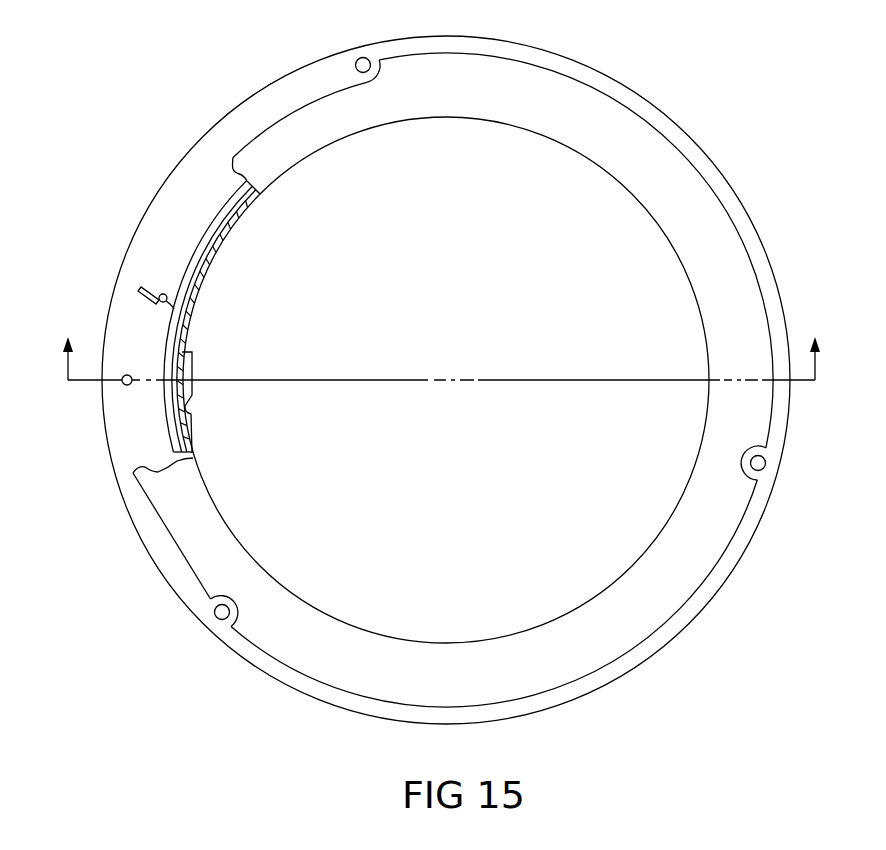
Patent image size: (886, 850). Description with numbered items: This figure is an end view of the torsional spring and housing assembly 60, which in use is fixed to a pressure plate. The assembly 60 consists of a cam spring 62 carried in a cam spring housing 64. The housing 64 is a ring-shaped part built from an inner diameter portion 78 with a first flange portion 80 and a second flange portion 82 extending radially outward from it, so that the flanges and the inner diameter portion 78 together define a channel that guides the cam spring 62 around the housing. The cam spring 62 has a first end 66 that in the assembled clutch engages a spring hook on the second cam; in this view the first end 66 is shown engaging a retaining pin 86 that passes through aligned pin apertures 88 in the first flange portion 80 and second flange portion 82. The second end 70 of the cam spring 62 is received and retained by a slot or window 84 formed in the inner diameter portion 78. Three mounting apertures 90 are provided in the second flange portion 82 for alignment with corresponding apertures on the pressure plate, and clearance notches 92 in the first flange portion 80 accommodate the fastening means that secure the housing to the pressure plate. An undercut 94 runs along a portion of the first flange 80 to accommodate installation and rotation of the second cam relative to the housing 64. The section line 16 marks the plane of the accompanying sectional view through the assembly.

The section line 16- 16 is at (447, 361).
The torsional spring and housing assembly 60 is at (780, 211).
The cam spring 62 is at (222, 190).
The cam spring housing 64 is at (659, 101).
The first end 66 is at (161, 302).
The second end 70 is at (194, 353).
The inner diameter portion 78 is at (228, 233).
The first flange portion 80 is at (679, 609).
The second flange portion 82 is at (747, 548).
The slot or window 84 is at (190, 409).
The retaining pin 86 is at (158, 290).
The pin apertures 88 is at (165, 293).
The mounting apertures 90 is at (365, 57).
The clearance notches 92 is at (766, 474).
The undercut 94 is at (270, 125).